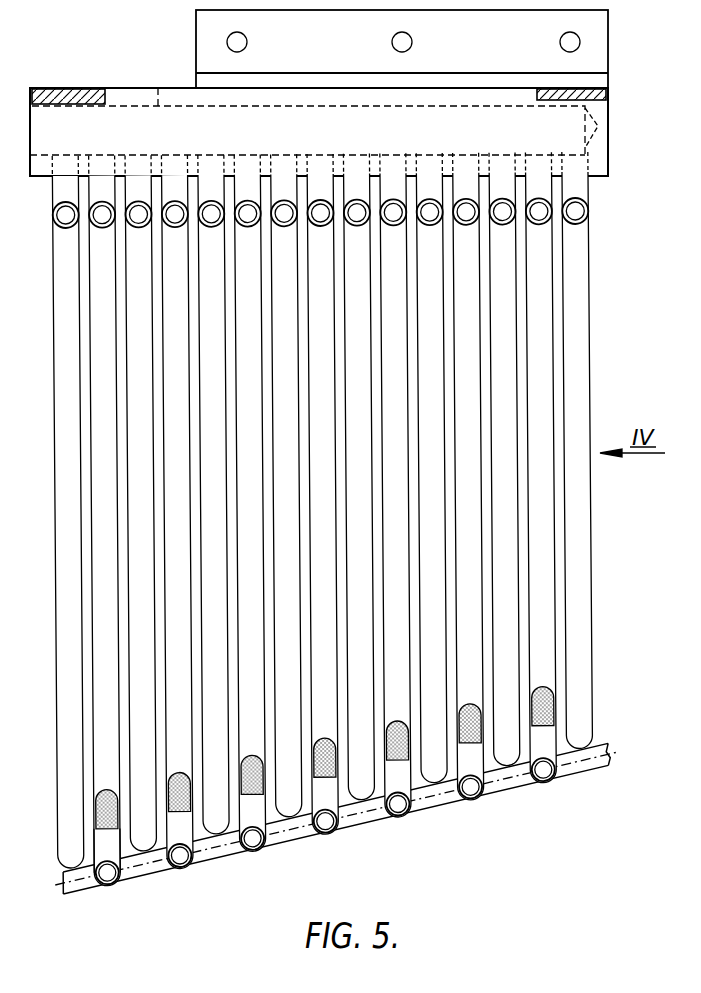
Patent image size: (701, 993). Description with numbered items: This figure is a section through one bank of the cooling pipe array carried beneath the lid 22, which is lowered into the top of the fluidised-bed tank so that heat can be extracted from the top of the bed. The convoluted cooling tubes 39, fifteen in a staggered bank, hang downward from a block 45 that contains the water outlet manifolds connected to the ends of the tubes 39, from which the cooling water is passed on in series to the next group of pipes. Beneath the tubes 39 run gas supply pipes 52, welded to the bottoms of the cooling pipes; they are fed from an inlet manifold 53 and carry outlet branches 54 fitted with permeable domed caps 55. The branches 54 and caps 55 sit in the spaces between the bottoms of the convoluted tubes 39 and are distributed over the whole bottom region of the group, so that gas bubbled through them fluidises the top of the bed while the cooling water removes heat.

The lid 22 is at (592, 93).
The tubes 39 is at (575, 310).
The block 45 is at (597, 160).
The gas supply pipes 52 is at (120, 876).
The inlet manifold 53 is at (607, 767).
The branches 54 is at (106, 845).
The permeable domed caps 55 is at (98, 803).